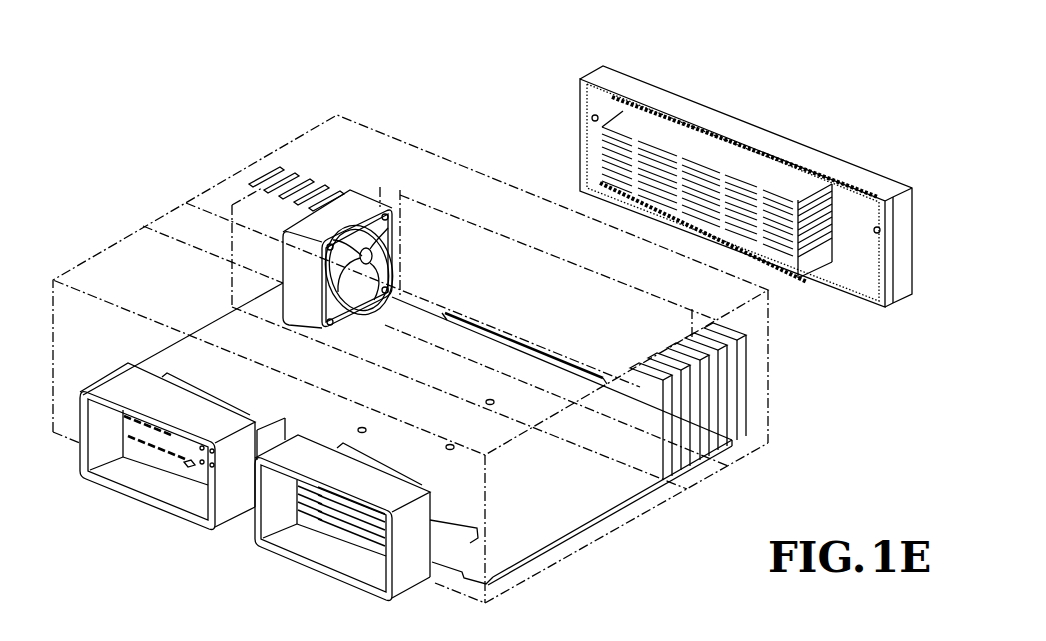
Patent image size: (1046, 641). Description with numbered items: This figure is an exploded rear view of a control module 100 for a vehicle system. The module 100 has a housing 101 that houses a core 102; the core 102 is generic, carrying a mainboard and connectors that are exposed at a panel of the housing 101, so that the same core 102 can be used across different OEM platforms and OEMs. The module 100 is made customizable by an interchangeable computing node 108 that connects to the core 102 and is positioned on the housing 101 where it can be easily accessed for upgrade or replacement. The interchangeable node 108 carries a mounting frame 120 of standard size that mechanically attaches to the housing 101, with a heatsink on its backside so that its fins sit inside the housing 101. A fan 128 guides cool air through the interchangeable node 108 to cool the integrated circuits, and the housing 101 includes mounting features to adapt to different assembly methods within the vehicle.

The module 100 is at (767, 97).
The housing 101 is at (148, 228).
The core 102 is at (572, 507).
The interchangeable node 108 is at (848, 203).
The mounting frame 120 is at (915, 257).
The fan 128 is at (303, 260).